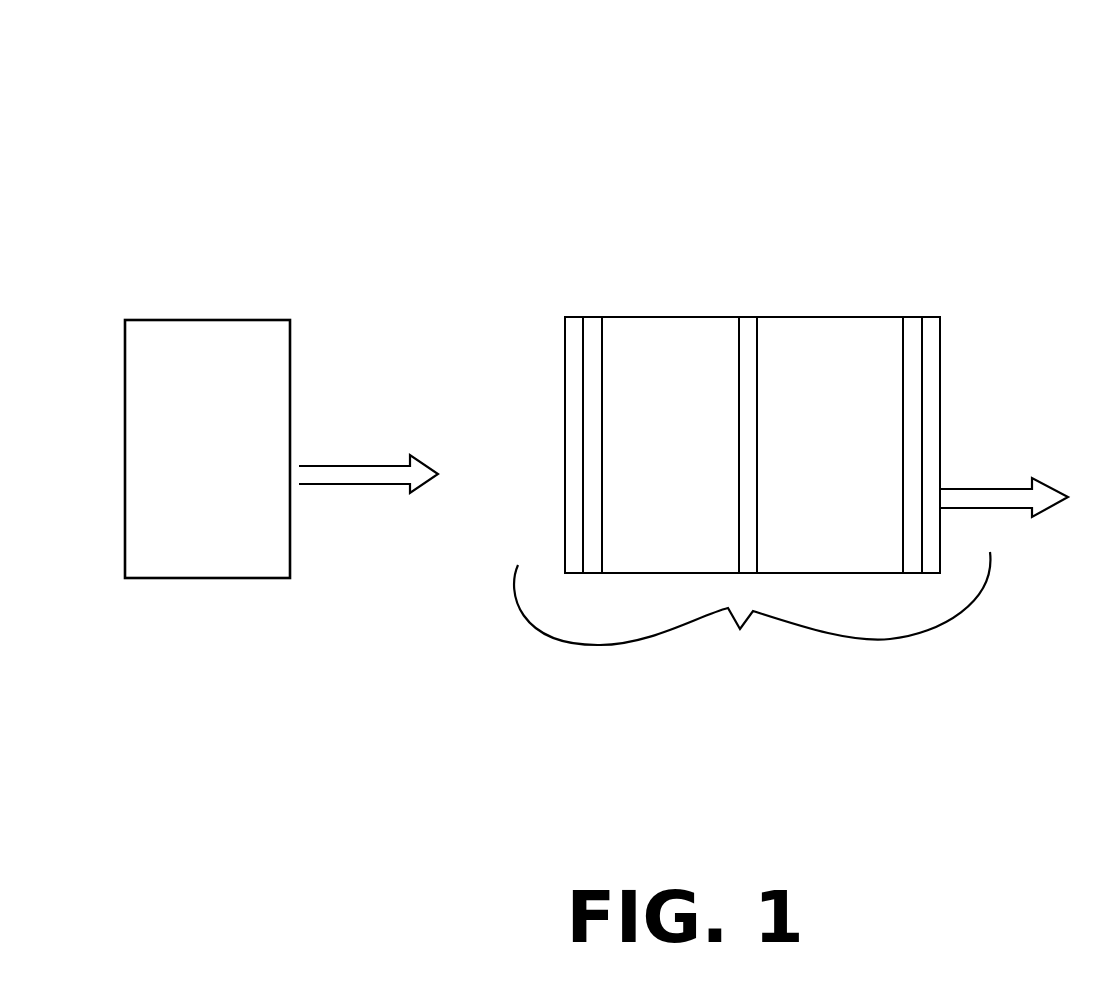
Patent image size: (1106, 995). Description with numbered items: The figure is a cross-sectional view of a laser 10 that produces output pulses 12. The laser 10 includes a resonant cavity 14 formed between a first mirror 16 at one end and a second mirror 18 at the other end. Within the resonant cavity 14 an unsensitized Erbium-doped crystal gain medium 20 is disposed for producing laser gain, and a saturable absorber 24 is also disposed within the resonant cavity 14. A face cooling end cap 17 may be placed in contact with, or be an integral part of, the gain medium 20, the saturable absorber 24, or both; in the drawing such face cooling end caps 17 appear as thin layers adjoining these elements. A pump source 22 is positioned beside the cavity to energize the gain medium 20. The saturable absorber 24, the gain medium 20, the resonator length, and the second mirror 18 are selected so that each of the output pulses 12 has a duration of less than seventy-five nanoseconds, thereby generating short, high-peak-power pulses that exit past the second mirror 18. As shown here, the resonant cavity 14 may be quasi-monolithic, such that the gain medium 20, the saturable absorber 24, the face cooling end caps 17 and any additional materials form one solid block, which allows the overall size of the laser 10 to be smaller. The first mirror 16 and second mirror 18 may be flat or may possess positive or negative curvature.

The laser 10 is at (819, 146).
The output pulses 12 is at (987, 486).
The resonant cavity 14 is at (752, 608).
The first mirror 16 is at (572, 313).
The face cooling end cap 17 is at (595, 313).
The second mirror 18 is at (938, 313).
The gain medium 20 is at (649, 313).
The pump source 22 is at (212, 316).
The saturable absorber 24 is at (860, 313).